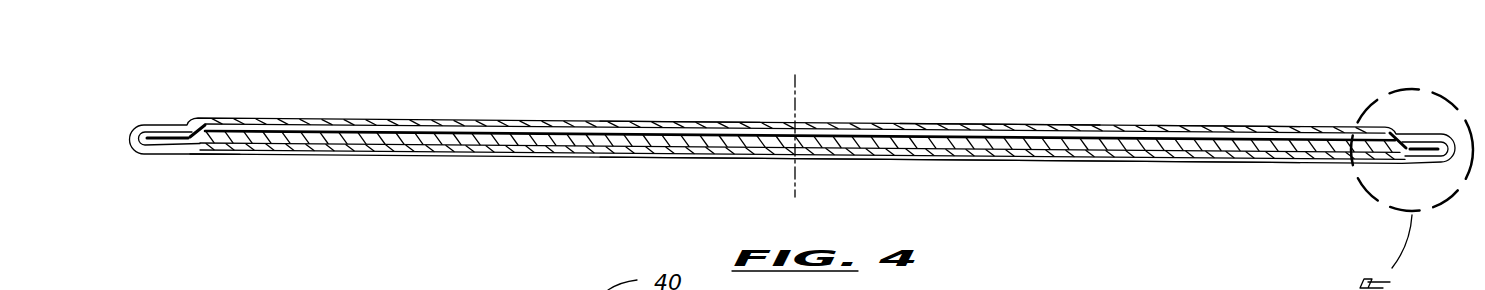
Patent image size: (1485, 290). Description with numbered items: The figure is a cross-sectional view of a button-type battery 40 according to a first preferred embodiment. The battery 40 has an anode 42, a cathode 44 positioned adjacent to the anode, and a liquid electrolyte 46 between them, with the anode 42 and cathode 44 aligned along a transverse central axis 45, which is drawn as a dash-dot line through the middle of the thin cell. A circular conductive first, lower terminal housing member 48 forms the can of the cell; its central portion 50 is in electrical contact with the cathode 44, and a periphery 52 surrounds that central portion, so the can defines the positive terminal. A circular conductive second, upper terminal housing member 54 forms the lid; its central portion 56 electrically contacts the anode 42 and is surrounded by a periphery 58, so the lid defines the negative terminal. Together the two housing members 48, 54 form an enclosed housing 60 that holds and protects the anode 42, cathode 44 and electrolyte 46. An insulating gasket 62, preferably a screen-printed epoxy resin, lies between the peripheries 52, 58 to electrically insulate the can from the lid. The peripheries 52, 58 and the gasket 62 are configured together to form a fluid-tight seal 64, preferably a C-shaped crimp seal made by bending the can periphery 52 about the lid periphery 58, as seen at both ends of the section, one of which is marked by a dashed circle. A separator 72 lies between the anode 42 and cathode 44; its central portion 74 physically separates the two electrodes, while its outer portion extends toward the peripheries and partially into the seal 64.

The button-type battery 40 is at (512, 90).
The anode 42 is at (755, 121).
The cathode 44 is at (712, 143).
The transverse central axis 45 is at (797, 108).
The liquid electrolyte 46 is at (198, 155).
The first terminal housing member 48 is at (1128, 166).
The central portion 50 is at (958, 155).
The periphery 52 is at (162, 153).
The second terminal housing member 54 is at (1020, 117).
The central portion 56 is at (895, 125).
The periphery 58 is at (170, 130).
The enclosed housing 60 is at (690, 122).
The insulating gasket 62 is at (148, 126).
The fluid-tight seal 64 is at (1416, 112).
The separator 72 is at (1215, 128).
The central portion 74 is at (857, 125).